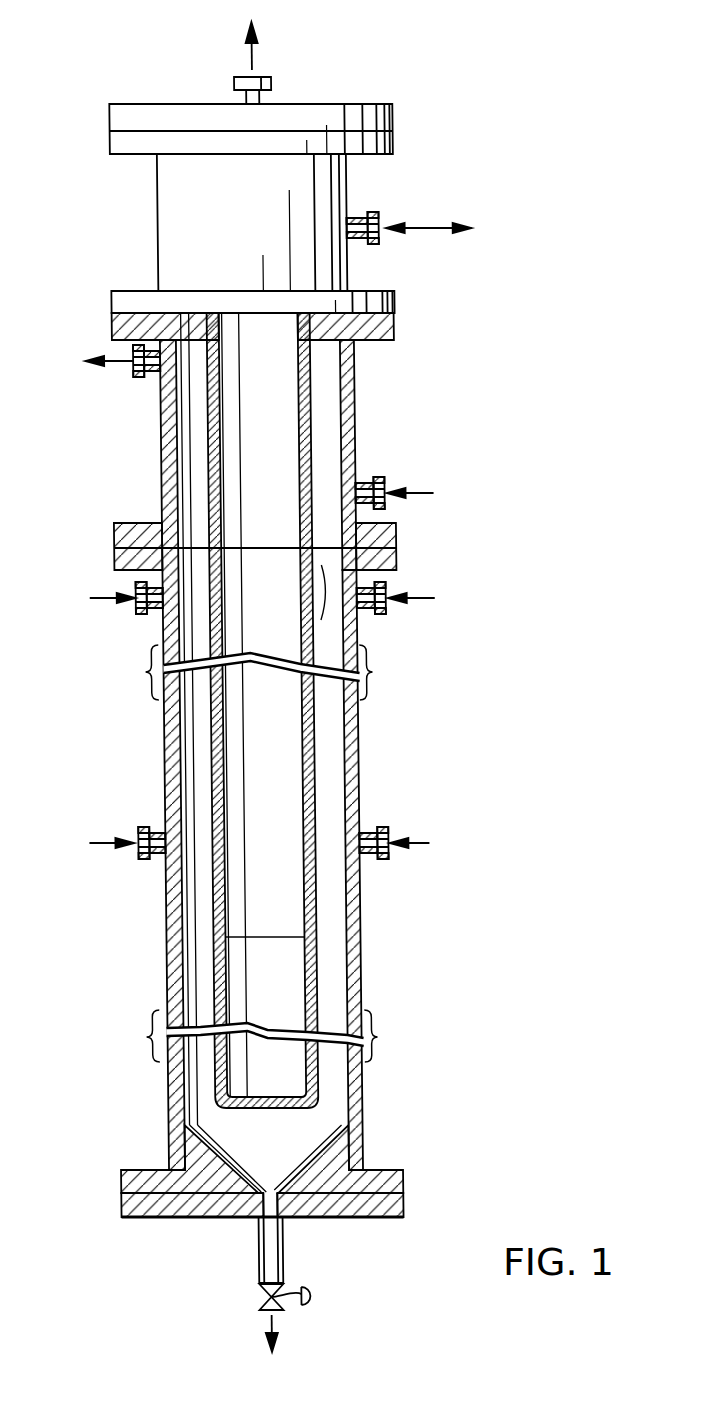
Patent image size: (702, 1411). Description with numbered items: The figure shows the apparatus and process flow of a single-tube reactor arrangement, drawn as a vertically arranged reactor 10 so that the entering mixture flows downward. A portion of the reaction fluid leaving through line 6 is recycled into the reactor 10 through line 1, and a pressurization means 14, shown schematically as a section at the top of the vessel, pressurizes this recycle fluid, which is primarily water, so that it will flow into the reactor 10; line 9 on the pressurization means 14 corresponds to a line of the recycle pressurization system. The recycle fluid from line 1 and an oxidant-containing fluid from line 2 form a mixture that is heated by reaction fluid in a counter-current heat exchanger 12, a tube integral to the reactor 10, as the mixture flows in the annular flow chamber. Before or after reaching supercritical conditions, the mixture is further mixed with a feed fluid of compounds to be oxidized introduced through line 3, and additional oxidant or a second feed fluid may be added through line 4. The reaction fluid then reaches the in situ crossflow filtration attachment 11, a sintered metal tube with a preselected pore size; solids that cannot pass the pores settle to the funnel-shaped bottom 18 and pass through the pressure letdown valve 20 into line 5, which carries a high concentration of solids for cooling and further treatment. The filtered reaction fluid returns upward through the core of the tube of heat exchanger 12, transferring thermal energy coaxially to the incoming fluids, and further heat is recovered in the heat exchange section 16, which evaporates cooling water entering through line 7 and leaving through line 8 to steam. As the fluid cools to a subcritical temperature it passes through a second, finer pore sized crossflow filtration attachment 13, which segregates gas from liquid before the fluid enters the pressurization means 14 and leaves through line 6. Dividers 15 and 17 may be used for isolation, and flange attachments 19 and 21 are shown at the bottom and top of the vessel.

The line 1 is at (88, 598).
The line 2 is at (420, 597).
The line 3 is at (85, 843).
The line 4 is at (421, 843).
The line 5 is at (260, 1315).
The line 6 is at (258, 68).
The line 7 is at (426, 493).
The line 8 is at (118, 364).
The line 9 is at (394, 226).
The reactor 10 is at (162, 934).
The crossflow filtration attachment 11 is at (247, 953).
The counter-current heat exchanger 12 is at (300, 820).
The second crossflow filtration attachment 13 is at (263, 540).
The pressurization means 14 is at (184, 220).
The divider 15 is at (327, 320).
The heat exchange section 16 is at (356, 416).
The divider 17 is at (318, 606).
The funnel-shaped bottom 18 is at (311, 1145).
The flange attachment 19 is at (343, 1218).
The pressure letdown valve 20 is at (287, 1300).
The flange attachment 21 is at (381, 104).